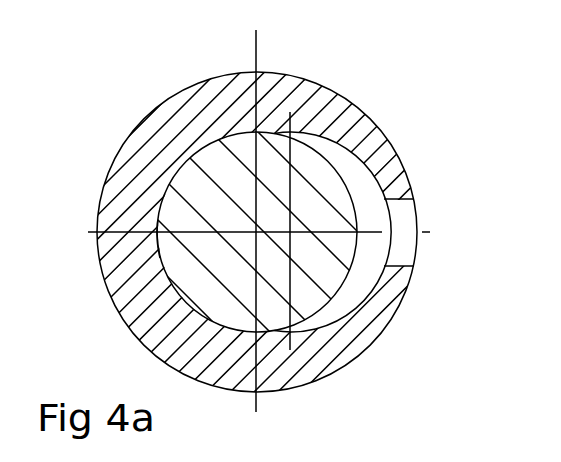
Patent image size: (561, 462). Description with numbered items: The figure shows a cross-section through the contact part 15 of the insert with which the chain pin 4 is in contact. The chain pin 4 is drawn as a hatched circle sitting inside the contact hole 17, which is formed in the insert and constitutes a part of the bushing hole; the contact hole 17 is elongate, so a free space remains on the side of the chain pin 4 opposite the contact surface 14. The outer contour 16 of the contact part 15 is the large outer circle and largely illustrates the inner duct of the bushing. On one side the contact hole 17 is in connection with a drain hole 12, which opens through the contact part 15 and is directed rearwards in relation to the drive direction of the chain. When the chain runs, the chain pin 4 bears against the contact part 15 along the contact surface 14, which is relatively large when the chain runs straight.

The chain pin 4 is at (243, 188).
The drain hole 12 is at (407, 249).
The contact surface 14 is at (155, 248).
The contact part 15 is at (163, 138).
The outer contour 16 is at (318, 84).
The contact hole 17 is at (352, 298).